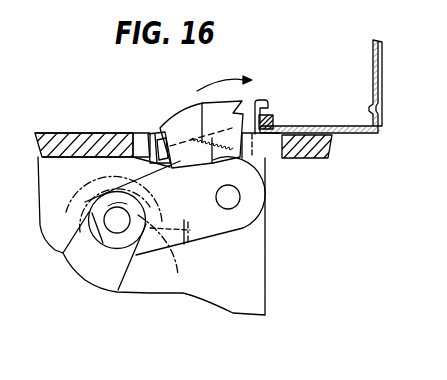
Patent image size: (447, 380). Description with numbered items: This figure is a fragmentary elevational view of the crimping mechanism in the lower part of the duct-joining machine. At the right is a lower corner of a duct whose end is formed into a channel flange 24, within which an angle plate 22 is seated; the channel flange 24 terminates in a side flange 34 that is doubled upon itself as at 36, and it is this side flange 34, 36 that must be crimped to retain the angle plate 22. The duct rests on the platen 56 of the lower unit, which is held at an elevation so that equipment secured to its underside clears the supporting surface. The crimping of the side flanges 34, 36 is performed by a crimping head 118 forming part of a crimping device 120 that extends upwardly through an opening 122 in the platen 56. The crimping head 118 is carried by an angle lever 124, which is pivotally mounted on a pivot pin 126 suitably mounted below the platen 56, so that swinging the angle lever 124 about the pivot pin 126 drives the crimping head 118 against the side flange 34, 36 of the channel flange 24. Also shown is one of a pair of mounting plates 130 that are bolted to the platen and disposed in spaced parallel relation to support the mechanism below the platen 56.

The angle plate 22 is at (333, 103).
The channel flange 24 is at (353, 134).
The side flange 34 is at (262, 102).
The doubled portion of side flange 36 is at (274, 120).
The platen 56 is at (307, 158).
The crimping head 118 is at (207, 100).
The crimping device 120 is at (247, 228).
The opening in the platen 122 is at (138, 138).
The angle lever 124 is at (165, 293).
The pivot pin 126 is at (240, 196).
The mounting plate 130 is at (247, 289).